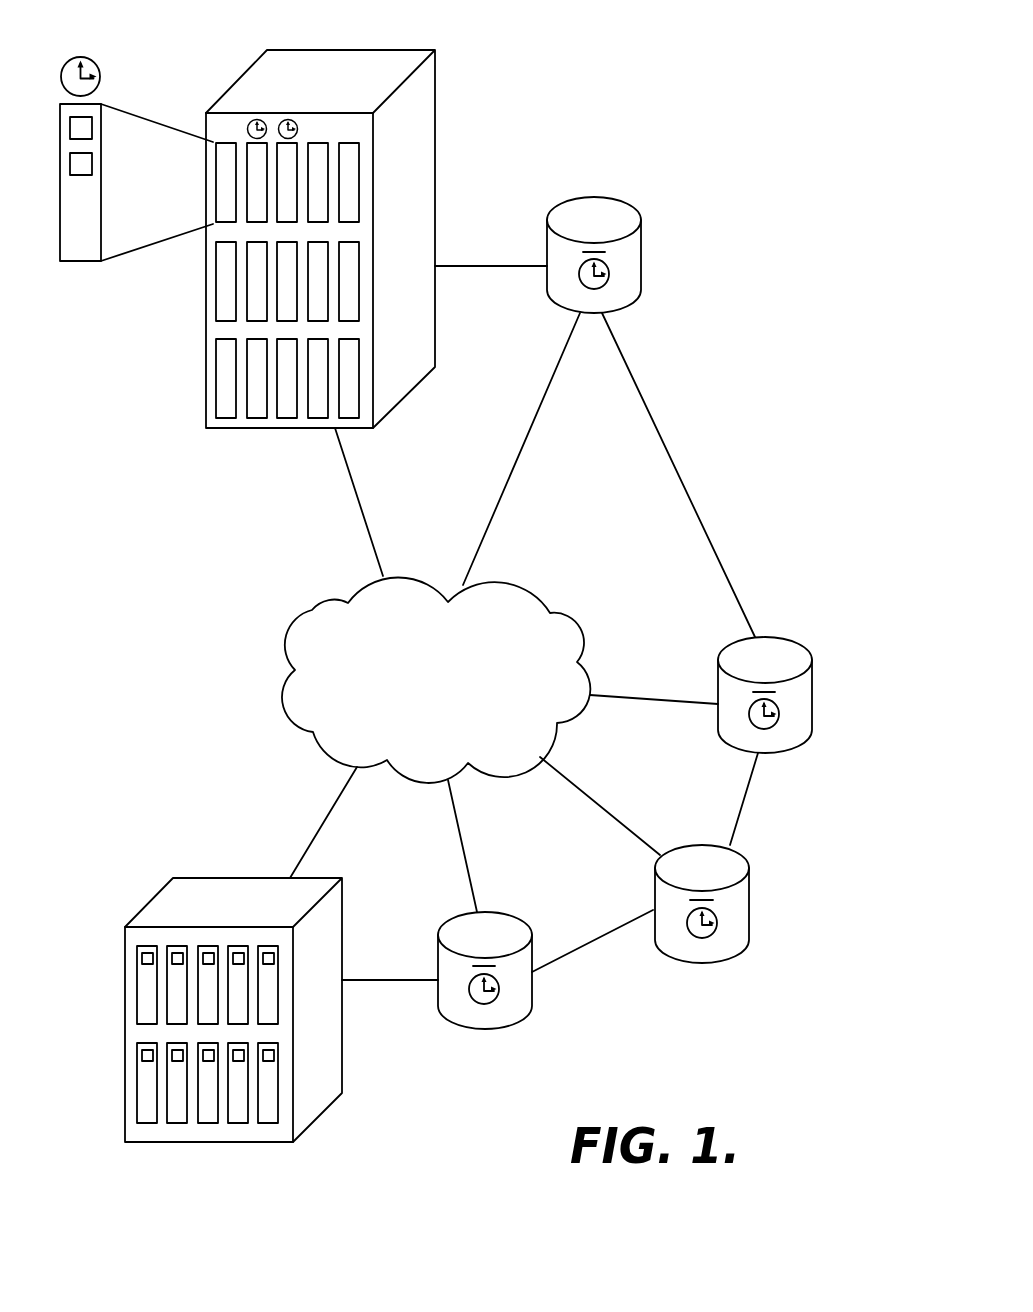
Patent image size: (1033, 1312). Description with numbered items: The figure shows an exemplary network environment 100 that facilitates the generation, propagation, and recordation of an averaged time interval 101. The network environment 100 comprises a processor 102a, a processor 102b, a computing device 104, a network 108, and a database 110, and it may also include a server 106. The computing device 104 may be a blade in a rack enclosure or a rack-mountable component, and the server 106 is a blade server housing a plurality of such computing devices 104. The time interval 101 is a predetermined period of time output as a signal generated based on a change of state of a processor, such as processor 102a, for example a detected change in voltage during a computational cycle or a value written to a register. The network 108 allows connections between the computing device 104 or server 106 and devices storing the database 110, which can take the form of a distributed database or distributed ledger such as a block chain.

The network environment 100 is at (717, 83).
The time interval 101 is at (82, 57).
The processor 102a is at (92, 128).
The processor 102b is at (92, 164).
The computing device 104 is at (104, 214).
The server 106 is at (436, 90).
The network 108 is at (312, 610).
The database 110 is at (616, 199).